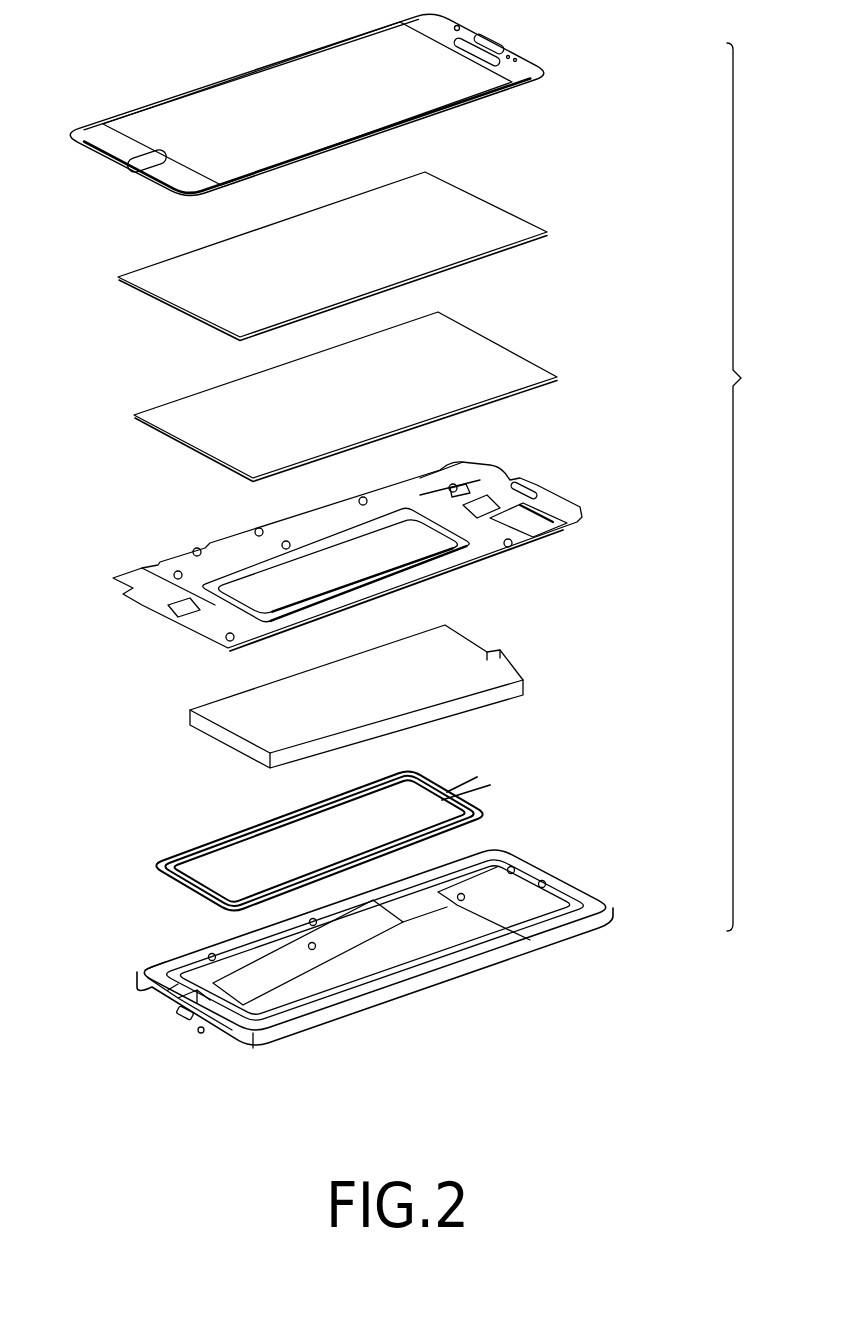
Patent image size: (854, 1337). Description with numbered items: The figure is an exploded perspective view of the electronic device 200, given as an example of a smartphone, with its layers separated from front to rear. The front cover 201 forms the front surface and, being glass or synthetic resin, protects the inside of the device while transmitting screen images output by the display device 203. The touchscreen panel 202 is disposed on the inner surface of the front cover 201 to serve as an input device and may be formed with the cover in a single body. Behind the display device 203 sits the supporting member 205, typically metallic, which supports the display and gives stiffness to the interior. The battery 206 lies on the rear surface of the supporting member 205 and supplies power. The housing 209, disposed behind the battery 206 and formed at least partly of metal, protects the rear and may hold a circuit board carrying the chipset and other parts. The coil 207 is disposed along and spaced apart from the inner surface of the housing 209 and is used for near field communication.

The electronic device 200 is at (754, 487).
The front cover 201 is at (553, 72).
The touchscreen panel 202 is at (548, 231).
The display device 203 is at (498, 347).
The supporting member 205 is at (581, 505).
The battery 206 is at (487, 652).
The coil 207 is at (488, 817).
The housing 209 is at (611, 905).